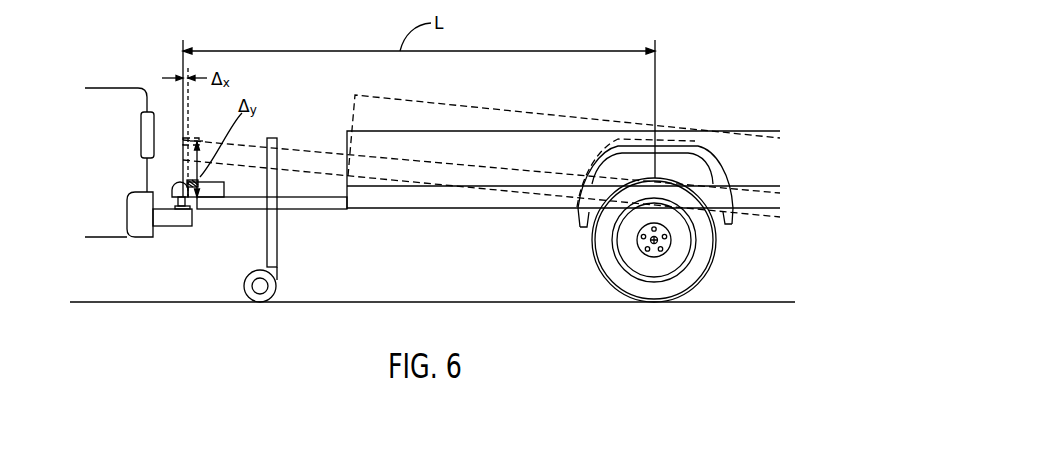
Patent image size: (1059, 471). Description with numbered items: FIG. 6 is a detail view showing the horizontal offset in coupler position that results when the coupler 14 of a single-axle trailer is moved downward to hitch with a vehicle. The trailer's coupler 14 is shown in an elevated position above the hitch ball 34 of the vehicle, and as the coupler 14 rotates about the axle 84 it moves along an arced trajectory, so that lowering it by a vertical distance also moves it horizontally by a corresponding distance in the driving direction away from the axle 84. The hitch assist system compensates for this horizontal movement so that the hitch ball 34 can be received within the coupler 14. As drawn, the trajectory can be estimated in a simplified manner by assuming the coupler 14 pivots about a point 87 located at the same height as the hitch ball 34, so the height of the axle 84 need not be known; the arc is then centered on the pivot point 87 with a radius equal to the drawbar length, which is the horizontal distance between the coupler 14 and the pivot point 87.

The coupler 14 is at (172, 182).
The hitch ball 34 is at (172, 199).
The axle 84 is at (657, 252).
The pivot point 87 is at (655, 192).